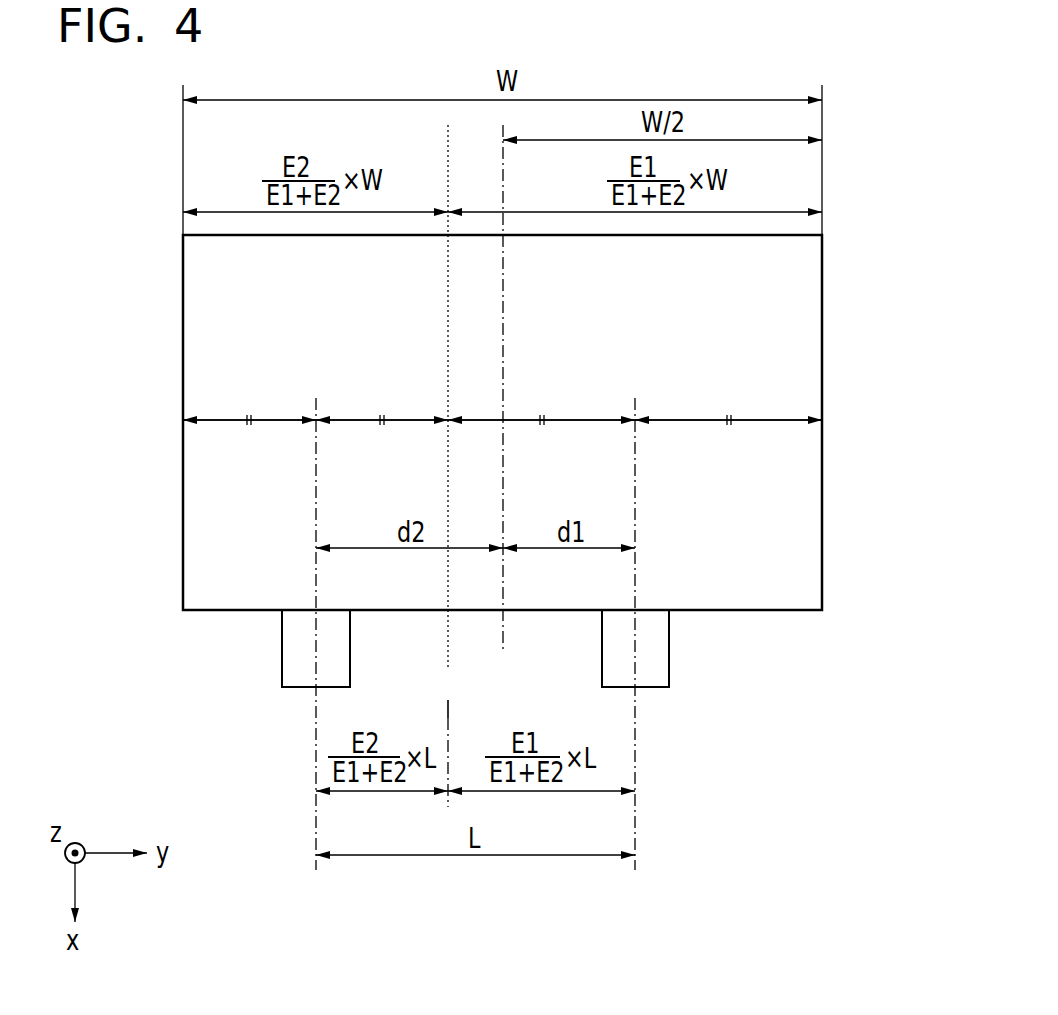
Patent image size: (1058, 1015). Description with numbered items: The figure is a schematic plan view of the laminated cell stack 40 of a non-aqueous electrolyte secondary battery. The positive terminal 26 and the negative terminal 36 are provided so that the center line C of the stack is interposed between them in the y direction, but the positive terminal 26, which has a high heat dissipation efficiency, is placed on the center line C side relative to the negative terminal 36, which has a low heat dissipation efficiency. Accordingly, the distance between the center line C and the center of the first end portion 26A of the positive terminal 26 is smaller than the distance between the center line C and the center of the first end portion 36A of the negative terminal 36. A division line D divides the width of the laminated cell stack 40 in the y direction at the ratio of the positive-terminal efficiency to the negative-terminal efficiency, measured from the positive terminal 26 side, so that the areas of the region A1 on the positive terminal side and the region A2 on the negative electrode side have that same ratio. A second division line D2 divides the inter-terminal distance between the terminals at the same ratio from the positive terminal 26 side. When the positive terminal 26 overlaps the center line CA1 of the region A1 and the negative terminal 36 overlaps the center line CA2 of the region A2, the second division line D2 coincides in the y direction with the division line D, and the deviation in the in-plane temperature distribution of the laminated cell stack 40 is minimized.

The laminated cell stack 40 is at (860, 278).
The negative terminal 36 is at (298, 656).
The first end portion of the negative terminal 36A is at (316, 608).
The positive terminal 26 is at (653, 657).
The first end portion of the positive terminal 26A is at (637, 610).
The region of the positive terminal A1 is at (773, 340).
The region of the negative electrode side A2 is at (220, 337).
The center line C is at (503, 322).
The center line of region A1 CA1 is at (636, 484).
The center line of region A2 CA2 is at (316, 483).
The division line D is at (448, 640).
The second division line D2 is at (448, 715).